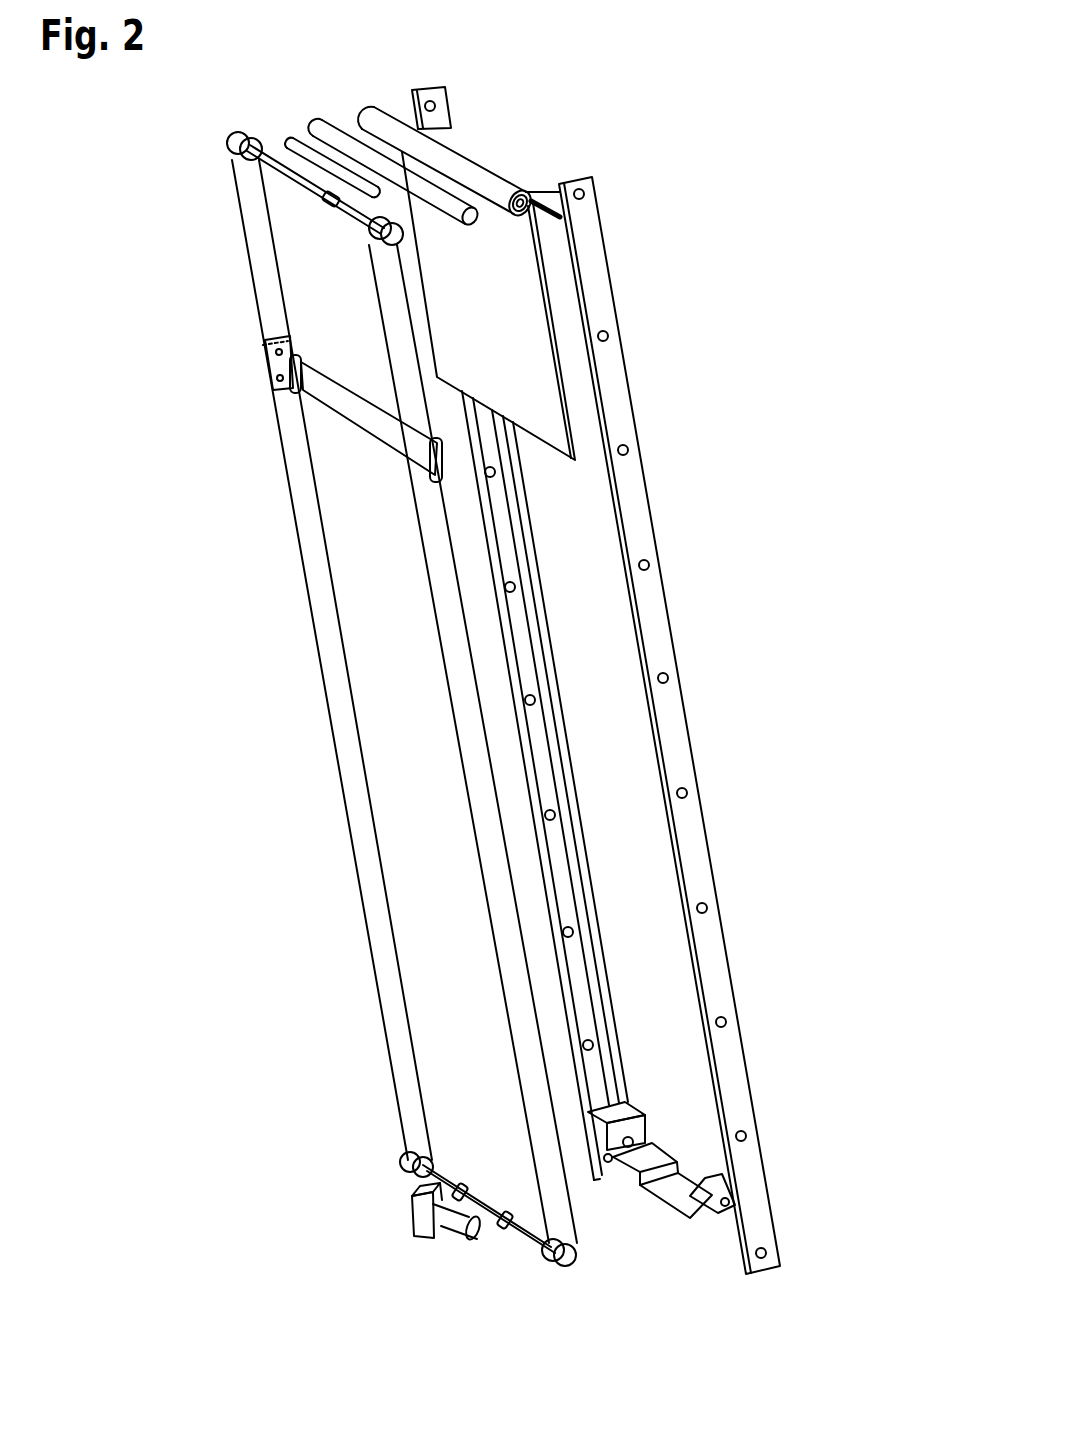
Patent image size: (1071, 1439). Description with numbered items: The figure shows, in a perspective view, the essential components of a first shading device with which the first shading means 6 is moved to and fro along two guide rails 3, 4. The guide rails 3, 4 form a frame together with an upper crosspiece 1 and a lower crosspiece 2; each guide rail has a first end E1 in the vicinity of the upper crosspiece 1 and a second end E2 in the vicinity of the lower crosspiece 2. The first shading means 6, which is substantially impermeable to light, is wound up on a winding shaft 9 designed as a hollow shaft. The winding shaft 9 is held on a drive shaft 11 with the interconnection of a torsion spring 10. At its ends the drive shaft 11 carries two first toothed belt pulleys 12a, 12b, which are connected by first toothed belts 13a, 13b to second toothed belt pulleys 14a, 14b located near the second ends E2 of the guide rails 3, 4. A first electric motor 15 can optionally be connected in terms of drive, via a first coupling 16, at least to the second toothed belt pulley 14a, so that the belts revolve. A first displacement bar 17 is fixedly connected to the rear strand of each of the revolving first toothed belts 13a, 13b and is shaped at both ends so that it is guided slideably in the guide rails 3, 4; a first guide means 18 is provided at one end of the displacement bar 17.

The upper crosspiece 1 is at (540, 187).
The lower crosspiece 2 is at (678, 1183).
The guide rail 3 is at (655, 593).
The guide rail 4 is at (506, 543).
The first shading means 6 is at (518, 290).
The winding shaft 9 is at (345, 143).
The torsion spring 10 is at (299, 148).
The drive shaft 11 is at (303, 180).
The first toothed belt pulley 12a is at (235, 148).
The first toothed belt pulley 12b is at (378, 236).
The first toothed belt 13a is at (340, 800).
The first toothed belt 13b is at (487, 875).
The second toothed belt pulley 14a is at (408, 1165).
The second toothed belt pulley 14b is at (566, 1258).
The first electric motor 15 is at (458, 1225).
The first coupling 16 is at (418, 1210).
The first displacement bar 17 is at (357, 418).
The first guide means 18 is at (268, 370).
The first end E1 is at (655, 204).
The second end E2 is at (800, 1256).